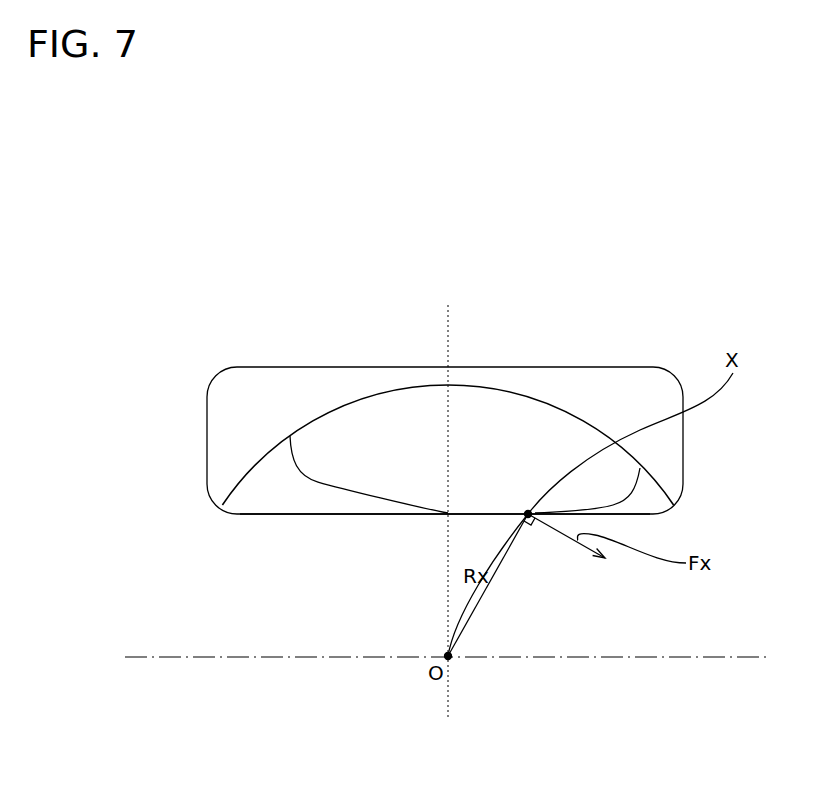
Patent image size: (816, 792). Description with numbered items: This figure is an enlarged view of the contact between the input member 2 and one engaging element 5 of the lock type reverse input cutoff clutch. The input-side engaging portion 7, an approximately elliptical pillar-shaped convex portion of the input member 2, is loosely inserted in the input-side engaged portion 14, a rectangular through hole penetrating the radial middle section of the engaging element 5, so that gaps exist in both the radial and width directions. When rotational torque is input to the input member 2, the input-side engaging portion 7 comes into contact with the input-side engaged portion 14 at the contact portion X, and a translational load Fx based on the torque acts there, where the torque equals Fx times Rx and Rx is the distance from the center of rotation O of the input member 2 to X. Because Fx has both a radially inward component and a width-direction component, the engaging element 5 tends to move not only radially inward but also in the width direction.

The input member 2 is at (353, 402).
The engaging element 5 is at (622, 318).
The input-side engaging portion 7 is at (500, 422).
The input-side engaged portion 14 is at (320, 513).